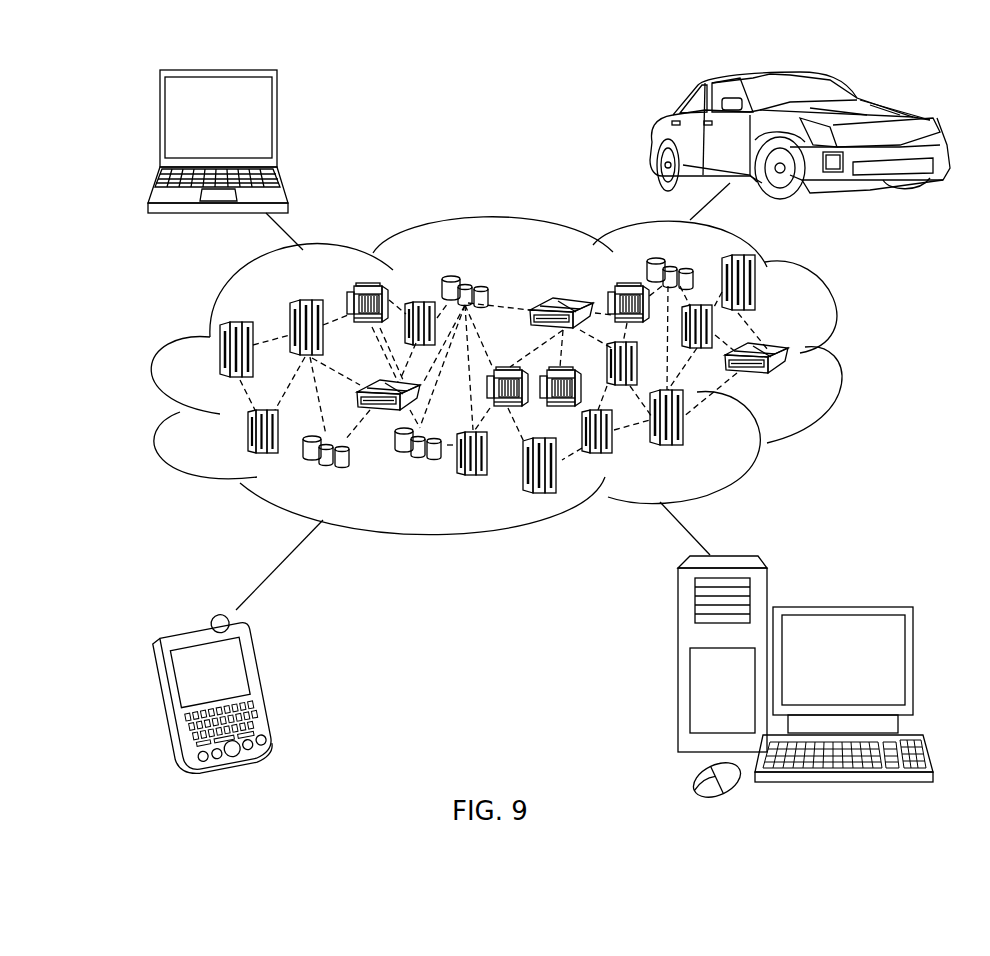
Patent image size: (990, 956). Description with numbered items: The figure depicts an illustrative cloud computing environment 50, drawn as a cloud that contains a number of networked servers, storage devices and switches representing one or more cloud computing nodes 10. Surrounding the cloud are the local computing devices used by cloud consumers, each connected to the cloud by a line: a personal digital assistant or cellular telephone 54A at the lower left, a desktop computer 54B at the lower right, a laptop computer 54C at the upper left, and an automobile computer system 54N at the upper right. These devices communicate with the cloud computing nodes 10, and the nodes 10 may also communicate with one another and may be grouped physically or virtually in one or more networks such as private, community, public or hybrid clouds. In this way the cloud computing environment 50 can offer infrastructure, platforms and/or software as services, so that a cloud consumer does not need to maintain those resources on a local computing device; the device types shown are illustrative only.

The cloud computing node 10 is at (797, 387).
The cloud computing environment 50 is at (840, 357).
The personal digital assistant or cellular telephone 54A is at (268, 683).
The desktop computer 54B is at (842, 605).
The laptop computer 54C is at (278, 122).
The automobile computer system 54N is at (653, 137).